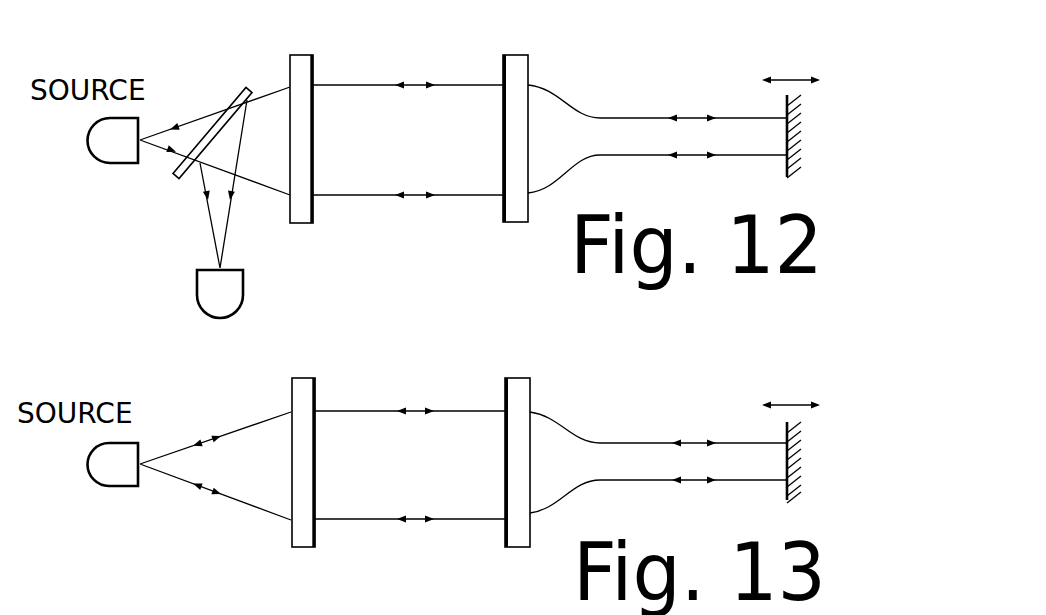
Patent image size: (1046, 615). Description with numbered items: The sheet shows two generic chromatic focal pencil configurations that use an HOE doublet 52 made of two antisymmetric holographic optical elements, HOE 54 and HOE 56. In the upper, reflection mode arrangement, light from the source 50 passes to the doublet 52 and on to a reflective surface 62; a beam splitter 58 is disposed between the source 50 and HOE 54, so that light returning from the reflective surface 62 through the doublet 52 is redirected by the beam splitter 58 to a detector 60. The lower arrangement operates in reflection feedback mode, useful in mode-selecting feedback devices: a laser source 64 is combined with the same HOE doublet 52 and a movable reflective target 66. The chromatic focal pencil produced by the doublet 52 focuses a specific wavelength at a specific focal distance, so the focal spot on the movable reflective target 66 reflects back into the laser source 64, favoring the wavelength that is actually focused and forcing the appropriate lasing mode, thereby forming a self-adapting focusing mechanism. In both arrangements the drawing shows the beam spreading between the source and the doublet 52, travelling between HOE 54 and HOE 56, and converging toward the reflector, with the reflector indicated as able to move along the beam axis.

In FIG. 12, the source 50 is at (128, 163).
In FIG. 12, the HOE doublet 52 is at (525, 231).
In FIG. 13, the HOE doublet 52 is at (528, 556).
In FIG. 12, the HOE 54 is at (304, 55).
In FIG. 12, the HOE 56 is at (513, 55).
In FIG. 12, the beam splitter 58 is at (180, 182).
In FIG. 12, the detector 60 is at (236, 318).
In FIG. 12, the reflective surface 62 is at (787, 166).
In FIG. 13, the laser source 64 is at (128, 486).
In FIG. 13, the movable reflective target 66 is at (787, 491).